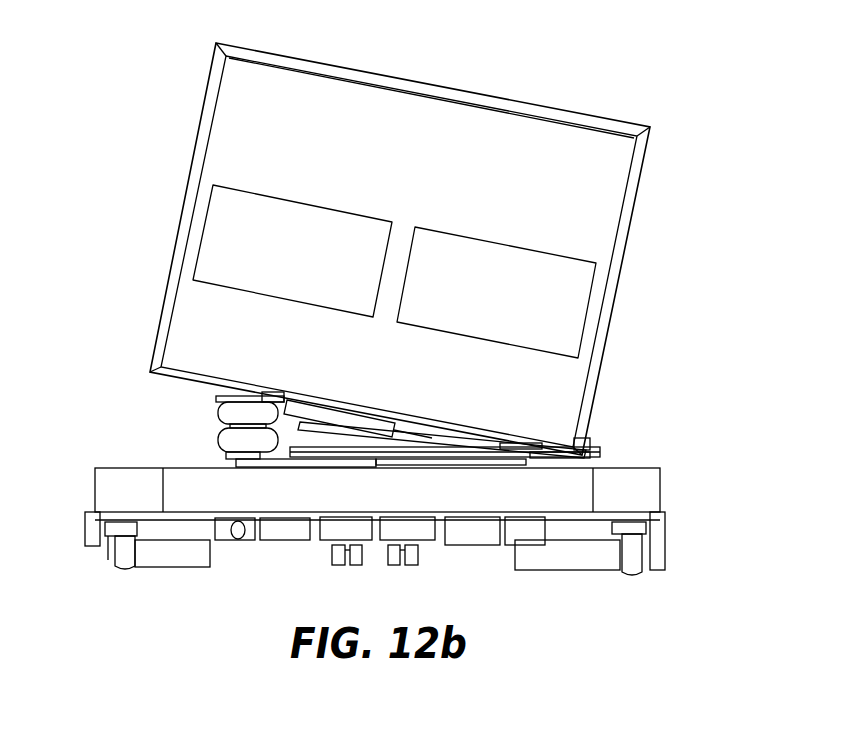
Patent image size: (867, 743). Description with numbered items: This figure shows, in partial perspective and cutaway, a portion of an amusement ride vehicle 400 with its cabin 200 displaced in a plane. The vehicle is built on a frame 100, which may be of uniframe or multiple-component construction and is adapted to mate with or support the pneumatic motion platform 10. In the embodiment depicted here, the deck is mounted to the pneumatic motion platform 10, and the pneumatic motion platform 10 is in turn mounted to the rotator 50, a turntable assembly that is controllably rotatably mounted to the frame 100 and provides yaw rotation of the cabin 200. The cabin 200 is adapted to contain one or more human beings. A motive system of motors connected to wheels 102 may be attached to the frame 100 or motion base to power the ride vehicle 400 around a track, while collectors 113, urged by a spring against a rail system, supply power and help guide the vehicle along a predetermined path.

The amusement ride vehicle 400 is at (88, 136).
The cabin 200 is at (652, 280).
The pneumatic motion platform 10 is at (192, 416).
The frame 100 is at (672, 506).
The rotator 50 is at (300, 466).
The collectors 113 is at (352, 568).
The wheels 102 is at (122, 566).